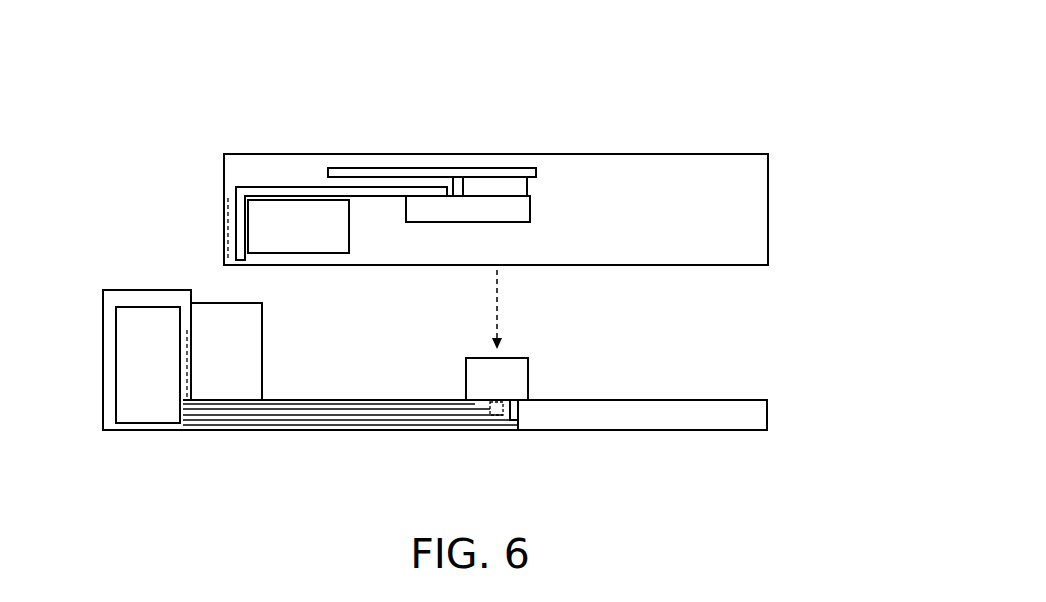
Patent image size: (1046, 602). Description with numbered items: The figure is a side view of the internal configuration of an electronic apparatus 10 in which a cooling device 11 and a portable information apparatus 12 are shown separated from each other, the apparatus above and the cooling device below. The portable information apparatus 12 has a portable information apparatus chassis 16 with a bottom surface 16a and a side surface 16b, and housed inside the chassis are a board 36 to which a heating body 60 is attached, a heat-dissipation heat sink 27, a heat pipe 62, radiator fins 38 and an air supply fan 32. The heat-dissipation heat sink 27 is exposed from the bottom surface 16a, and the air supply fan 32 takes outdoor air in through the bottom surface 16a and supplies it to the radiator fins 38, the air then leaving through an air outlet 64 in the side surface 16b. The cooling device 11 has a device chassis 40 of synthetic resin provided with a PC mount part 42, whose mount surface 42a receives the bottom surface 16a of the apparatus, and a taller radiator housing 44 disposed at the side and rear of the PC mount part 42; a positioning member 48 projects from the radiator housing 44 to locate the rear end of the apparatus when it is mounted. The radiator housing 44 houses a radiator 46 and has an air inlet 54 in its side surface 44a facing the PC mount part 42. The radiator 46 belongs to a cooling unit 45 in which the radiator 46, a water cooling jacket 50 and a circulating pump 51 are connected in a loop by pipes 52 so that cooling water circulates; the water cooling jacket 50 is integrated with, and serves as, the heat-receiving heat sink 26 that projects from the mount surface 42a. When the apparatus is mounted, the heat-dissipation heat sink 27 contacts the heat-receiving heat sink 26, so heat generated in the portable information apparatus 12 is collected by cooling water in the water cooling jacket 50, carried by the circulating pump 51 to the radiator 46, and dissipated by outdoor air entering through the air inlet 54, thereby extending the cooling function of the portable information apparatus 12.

The electronic apparatus 10 is at (440, 38).
The cooling device 11 is at (290, 455).
The portable information apparatus 12 is at (635, 125).
The portable information apparatus chassis 16 is at (585, 153).
The bottom surface 16a is at (718, 266).
The side surface 16b is at (223, 160).
The heat-receiving heat sink 26 is at (503, 390).
The water cooling jacket 50 is at (497, 379).
The heat-dissipation heat sink 27 is at (455, 193).
The air supply fan 32 is at (302, 207).
The board 36 is at (407, 173).
The radiator fins 38 is at (237, 253).
The device chassis 40 is at (648, 432).
The PC mount part 42 is at (720, 422).
The mount surface 42a is at (720, 400).
The radiator housing 44 is at (115, 290).
The side surface 44a is at (190, 377).
The cooling unit 45 is at (540, 418).
The radiator 46 is at (148, 307).
The positioning member 48 is at (210, 310).
The circulating pump 51 is at (473, 430).
The pipes 52 is at (337, 410).
The air inlet 54 is at (182, 360).
The heating body 60 is at (495, 187).
The heat pipe 62 is at (353, 192).
The air outlet 64 is at (227, 203).